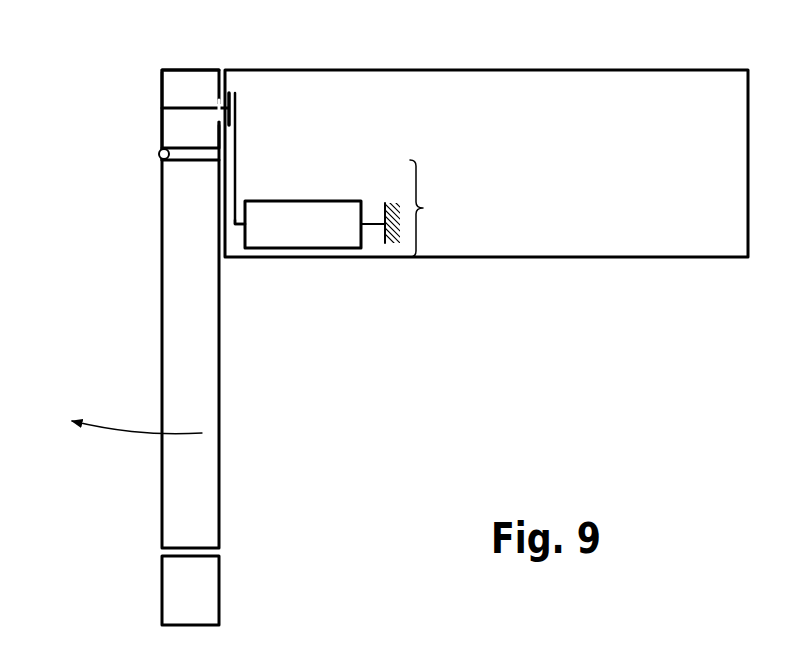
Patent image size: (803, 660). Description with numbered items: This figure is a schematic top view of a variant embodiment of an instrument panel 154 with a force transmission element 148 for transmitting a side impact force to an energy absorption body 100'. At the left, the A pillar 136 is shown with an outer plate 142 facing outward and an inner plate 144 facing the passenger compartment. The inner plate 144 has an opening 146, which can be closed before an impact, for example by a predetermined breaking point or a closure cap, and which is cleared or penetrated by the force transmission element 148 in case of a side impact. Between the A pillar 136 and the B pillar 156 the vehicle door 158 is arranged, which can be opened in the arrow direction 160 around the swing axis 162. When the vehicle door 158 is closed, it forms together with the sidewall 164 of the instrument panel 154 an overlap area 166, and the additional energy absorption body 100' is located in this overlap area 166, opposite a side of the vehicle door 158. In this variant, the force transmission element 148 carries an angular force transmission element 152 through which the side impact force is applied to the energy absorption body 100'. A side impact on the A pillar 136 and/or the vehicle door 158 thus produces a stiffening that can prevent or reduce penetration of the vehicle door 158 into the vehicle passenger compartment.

The A pillar 136 is at (184, 70).
The force transmission element 148 is at (192, 108).
The outer plate 142 is at (162, 118).
The inner plate 144 is at (212, 138).
The swing axis 162 is at (159, 153).
The opening 146 is at (214, 101).
The angular force transmission element 152 is at (236, 143).
The instrument panel 154 is at (602, 257).
The overlap area 166 is at (414, 208).
The energy absorption body 100' is at (360, 255).
The sidewall 164 is at (225, 233).
The arrow direction 160 is at (142, 436).
The vehicle door 158 is at (220, 498).
The B pillar 156 is at (220, 608).